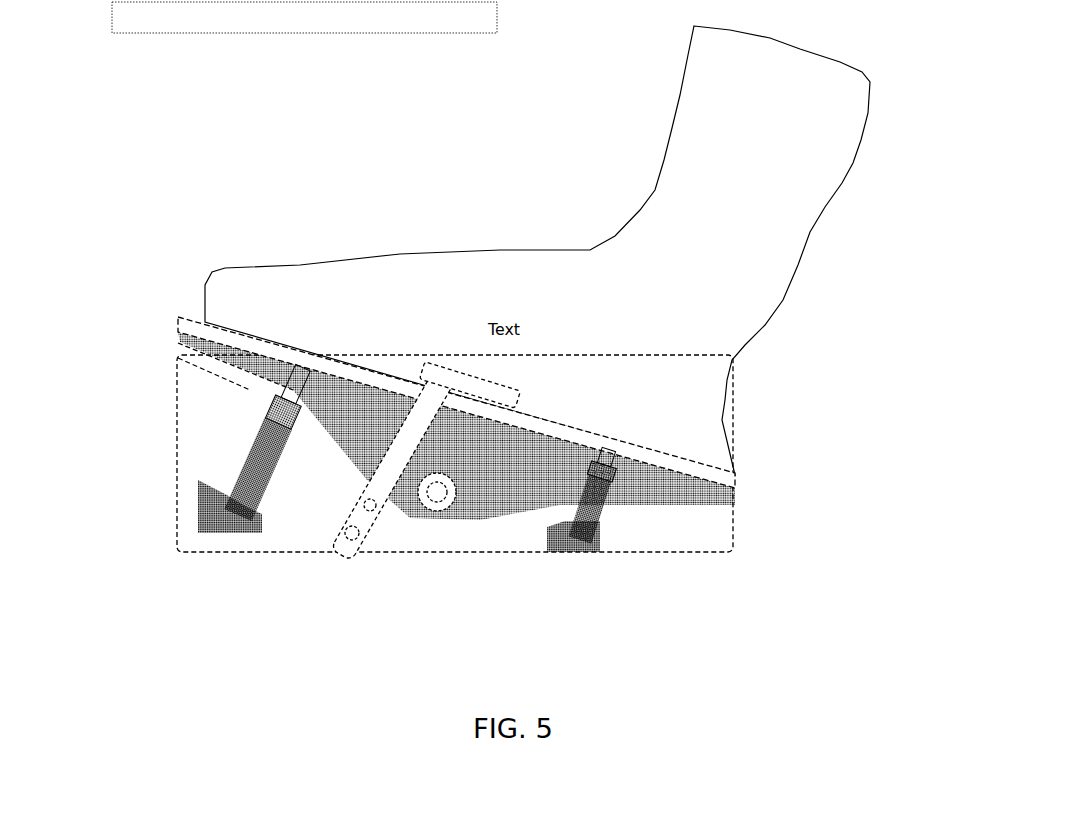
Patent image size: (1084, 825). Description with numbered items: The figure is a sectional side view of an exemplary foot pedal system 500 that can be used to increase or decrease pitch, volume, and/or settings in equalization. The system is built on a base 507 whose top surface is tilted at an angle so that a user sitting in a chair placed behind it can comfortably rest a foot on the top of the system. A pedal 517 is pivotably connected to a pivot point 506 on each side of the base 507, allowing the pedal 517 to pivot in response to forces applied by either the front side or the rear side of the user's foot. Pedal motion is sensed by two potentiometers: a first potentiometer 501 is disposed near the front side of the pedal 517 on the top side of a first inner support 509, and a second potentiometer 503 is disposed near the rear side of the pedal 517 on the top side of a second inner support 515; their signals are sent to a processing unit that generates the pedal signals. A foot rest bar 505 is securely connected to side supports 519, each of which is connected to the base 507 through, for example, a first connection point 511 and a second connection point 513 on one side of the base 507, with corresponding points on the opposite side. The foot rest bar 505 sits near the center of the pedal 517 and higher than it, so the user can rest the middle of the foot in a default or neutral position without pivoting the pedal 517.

The foot pedal system 500 is at (86, 101).
The first potentiometer 501 is at (350, 230).
The second potentiometer 503 is at (910, 433).
The foot rest bar 505 is at (461, 380).
The pivot point 506 is at (449, 520).
The base 507 is at (173, 455).
The first inner support 509 is at (243, 495).
The first connection point 511 is at (354, 546).
The second connection point 513 is at (373, 516).
The second inner support 515 is at (584, 520).
The pedal 517 is at (737, 487).
The side support 519 is at (445, 412).